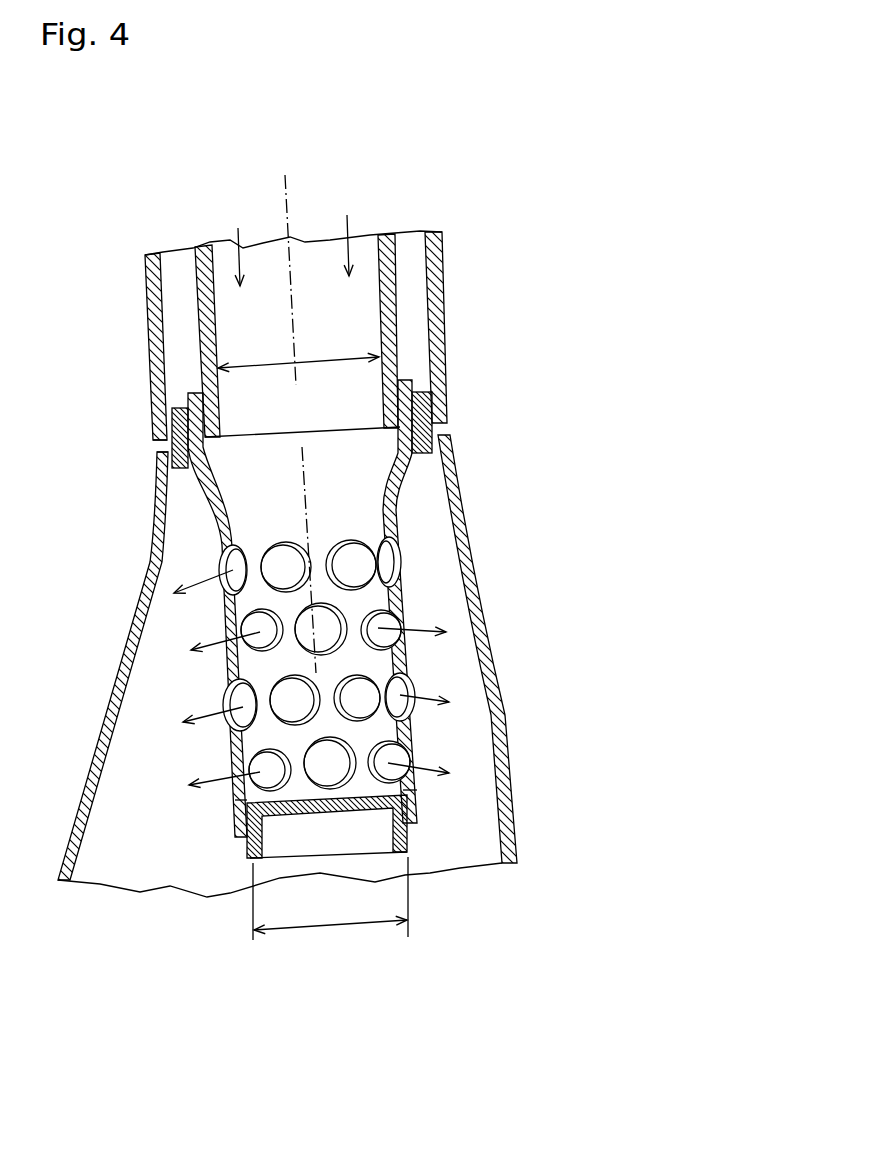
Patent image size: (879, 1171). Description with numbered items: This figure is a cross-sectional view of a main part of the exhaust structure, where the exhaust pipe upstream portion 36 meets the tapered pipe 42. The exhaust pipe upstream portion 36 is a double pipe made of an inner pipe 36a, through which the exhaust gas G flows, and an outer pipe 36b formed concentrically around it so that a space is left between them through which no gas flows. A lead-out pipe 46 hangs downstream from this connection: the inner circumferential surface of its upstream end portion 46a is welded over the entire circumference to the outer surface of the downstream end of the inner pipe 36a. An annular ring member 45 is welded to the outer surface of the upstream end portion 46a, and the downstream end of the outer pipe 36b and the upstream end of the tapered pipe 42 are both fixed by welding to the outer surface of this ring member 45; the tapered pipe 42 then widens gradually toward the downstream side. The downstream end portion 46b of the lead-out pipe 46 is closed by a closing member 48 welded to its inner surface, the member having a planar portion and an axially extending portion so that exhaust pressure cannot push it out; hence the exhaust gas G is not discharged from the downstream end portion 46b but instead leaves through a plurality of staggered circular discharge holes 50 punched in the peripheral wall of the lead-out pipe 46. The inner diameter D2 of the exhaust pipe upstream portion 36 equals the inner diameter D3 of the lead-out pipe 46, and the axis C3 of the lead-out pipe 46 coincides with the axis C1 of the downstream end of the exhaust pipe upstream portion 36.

The exhaust pipe upstream portion 36 is at (336, 312).
The inner pipe 36a is at (396, 298).
The outer pipe 36b is at (447, 327).
The tapered pipe 42 is at (512, 762).
The ring member 45 is at (170, 446).
The lead-out pipe 46 is at (384, 591).
The upstream end portion of the lead-out pipe 46a is at (401, 383).
The downstream end portion of the lead-out pipe 46b is at (412, 810).
The closing member 48 is at (404, 847).
The discharge hole 50 is at (360, 560).
The exhaust gas G is at (237, 240).
The axis of the downstream end of the exhaust pipe upstream portion C1 is at (292, 208).
The axis of the lead-out pipe C3 is at (306, 482).
The inner diameter of the exhaust pipe upstream portion D2 is at (270, 362).
The inner diameter of the lead-out pipe D3 is at (327, 928).